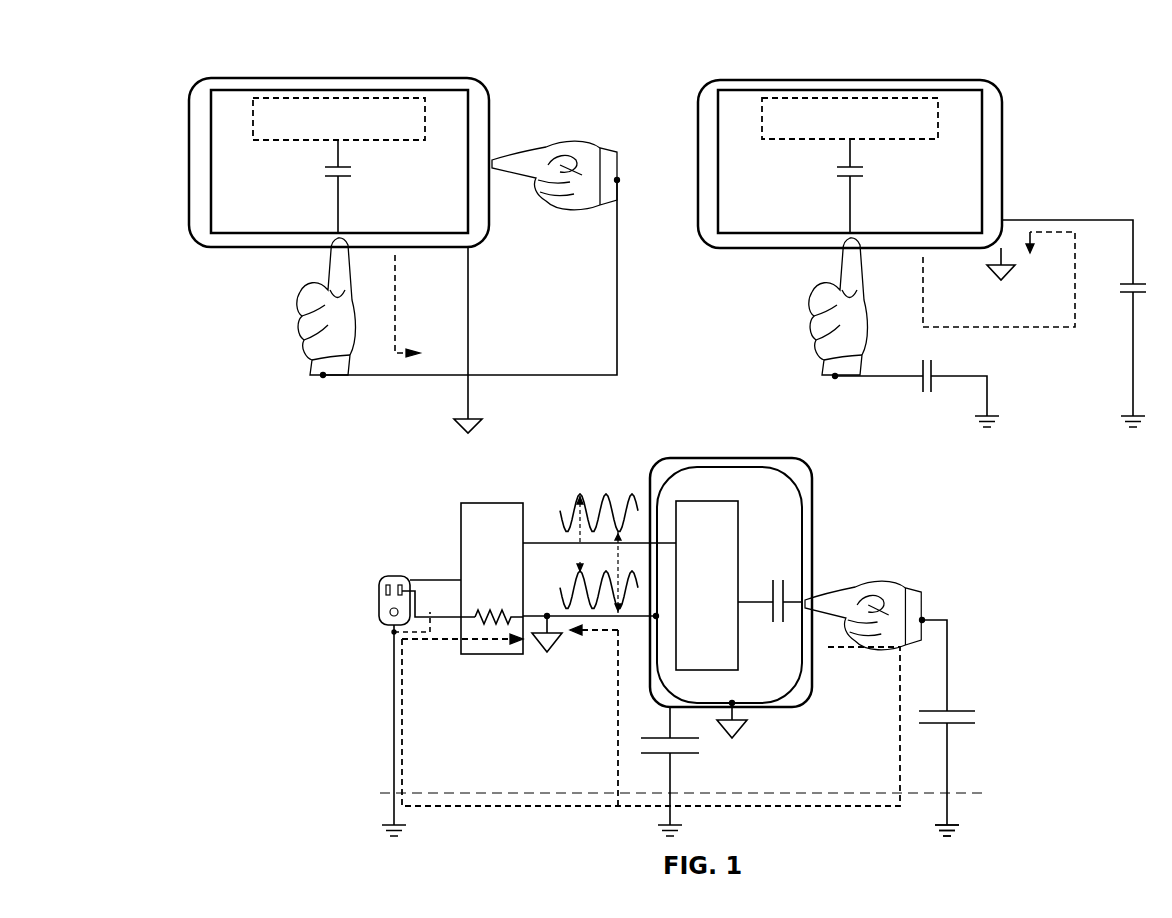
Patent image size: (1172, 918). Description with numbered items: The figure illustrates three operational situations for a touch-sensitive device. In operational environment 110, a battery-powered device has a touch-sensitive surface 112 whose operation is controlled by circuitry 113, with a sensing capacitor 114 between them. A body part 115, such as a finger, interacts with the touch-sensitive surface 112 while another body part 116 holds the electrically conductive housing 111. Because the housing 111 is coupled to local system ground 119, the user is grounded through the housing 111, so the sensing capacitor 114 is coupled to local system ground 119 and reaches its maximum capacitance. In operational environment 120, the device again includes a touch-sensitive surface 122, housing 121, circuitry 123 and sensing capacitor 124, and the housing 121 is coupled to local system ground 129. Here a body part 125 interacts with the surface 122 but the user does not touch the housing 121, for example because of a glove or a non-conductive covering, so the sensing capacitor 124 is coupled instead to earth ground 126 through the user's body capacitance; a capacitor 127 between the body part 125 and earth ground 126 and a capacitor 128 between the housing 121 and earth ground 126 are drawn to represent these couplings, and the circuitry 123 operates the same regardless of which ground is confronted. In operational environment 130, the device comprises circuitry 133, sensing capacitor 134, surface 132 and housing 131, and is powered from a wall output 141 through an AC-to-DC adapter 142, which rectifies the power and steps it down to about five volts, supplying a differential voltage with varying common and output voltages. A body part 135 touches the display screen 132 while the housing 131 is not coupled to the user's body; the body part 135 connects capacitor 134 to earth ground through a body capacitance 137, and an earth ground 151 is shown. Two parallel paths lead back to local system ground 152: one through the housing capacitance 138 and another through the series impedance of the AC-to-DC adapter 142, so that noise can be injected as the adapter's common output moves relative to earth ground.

The operational environment 110 is at (208, 67).
The housing 111 is at (486, 106).
The touch-sensitive surface 112 is at (213, 224).
The circuitry 113 is at (425, 134).
The sensing capacitor 114 is at (346, 168).
The body part 115 is at (350, 278).
The body part 116 is at (593, 156).
The local system ground 119 is at (455, 421).
The operational environment 120 is at (728, 67).
The housing 121 is at (1001, 110).
The touch-sensitive surface 122 is at (719, 224).
The circuitry 123 is at (939, 134).
The sensing capacitor 124 is at (857, 168).
The body part 125 is at (868, 282).
The earth ground 126 is at (975, 416).
The body to earth capacitance 127 is at (926, 362).
The device to earth capacitance 128 is at (1121, 285).
The local system ground 129 is at (988, 280).
The operational environment 130 is at (383, 477).
The housing 131 is at (812, 567).
The surface 132 is at (658, 484).
The circuitry 133 is at (739, 518).
The sensing capacitor 134 is at (774, 618).
The body part 135 is at (880, 592).
The body capacitance C_BODY 137 is at (920, 711).
The housing capacitance 138 is at (642, 738).
The wall output 141 is at (385, 578).
The AC-to-DC adapter 142 is at (490, 504).
The earth ground 151 is at (947, 825).
The local system ground 152 is at (549, 648).